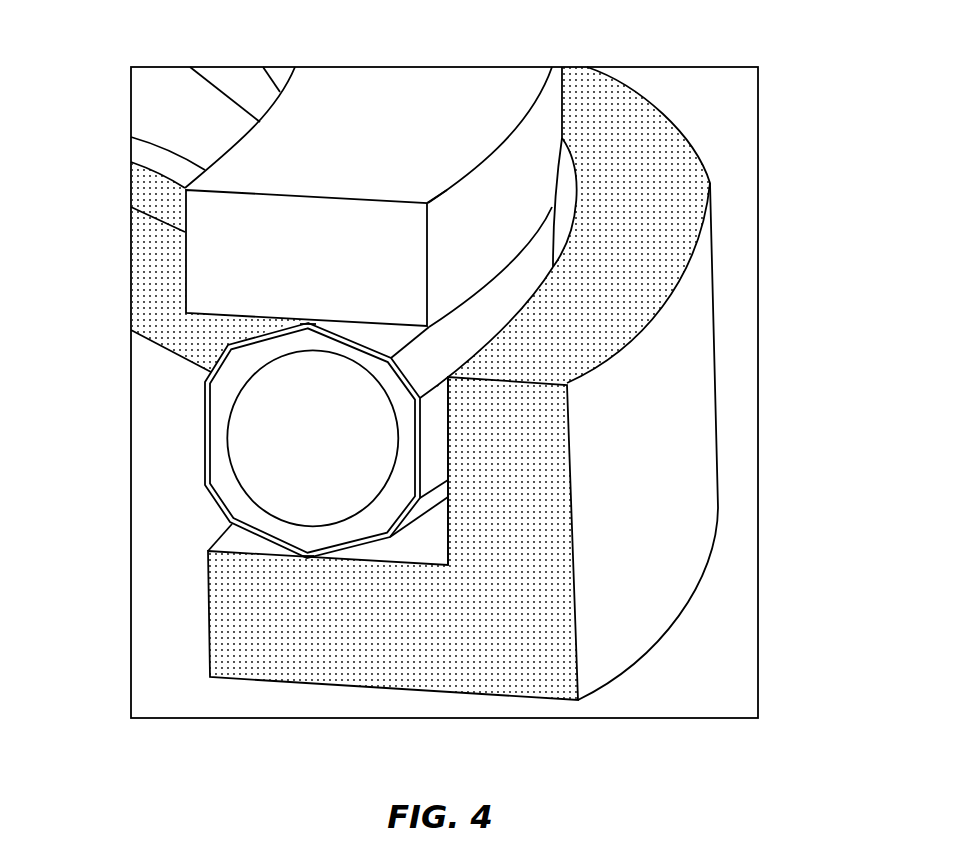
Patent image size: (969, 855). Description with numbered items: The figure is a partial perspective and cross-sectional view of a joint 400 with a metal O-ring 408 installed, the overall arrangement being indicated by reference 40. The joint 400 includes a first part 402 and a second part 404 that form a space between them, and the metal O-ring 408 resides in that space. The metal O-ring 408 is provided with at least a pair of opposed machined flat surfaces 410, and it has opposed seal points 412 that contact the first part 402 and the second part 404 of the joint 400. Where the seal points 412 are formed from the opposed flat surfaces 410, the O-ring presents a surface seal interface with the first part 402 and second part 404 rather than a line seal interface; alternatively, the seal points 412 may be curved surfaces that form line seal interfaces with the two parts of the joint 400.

The connector assembly 40 is at (110, 355).
The joint 400 is at (796, 310).
The first part 402 is at (448, 84).
The second part 404 is at (706, 500).
The metal O-ring 408 is at (230, 497).
The machined flat surface 410 is at (205, 433).
The seal points 412 is at (308, 323).